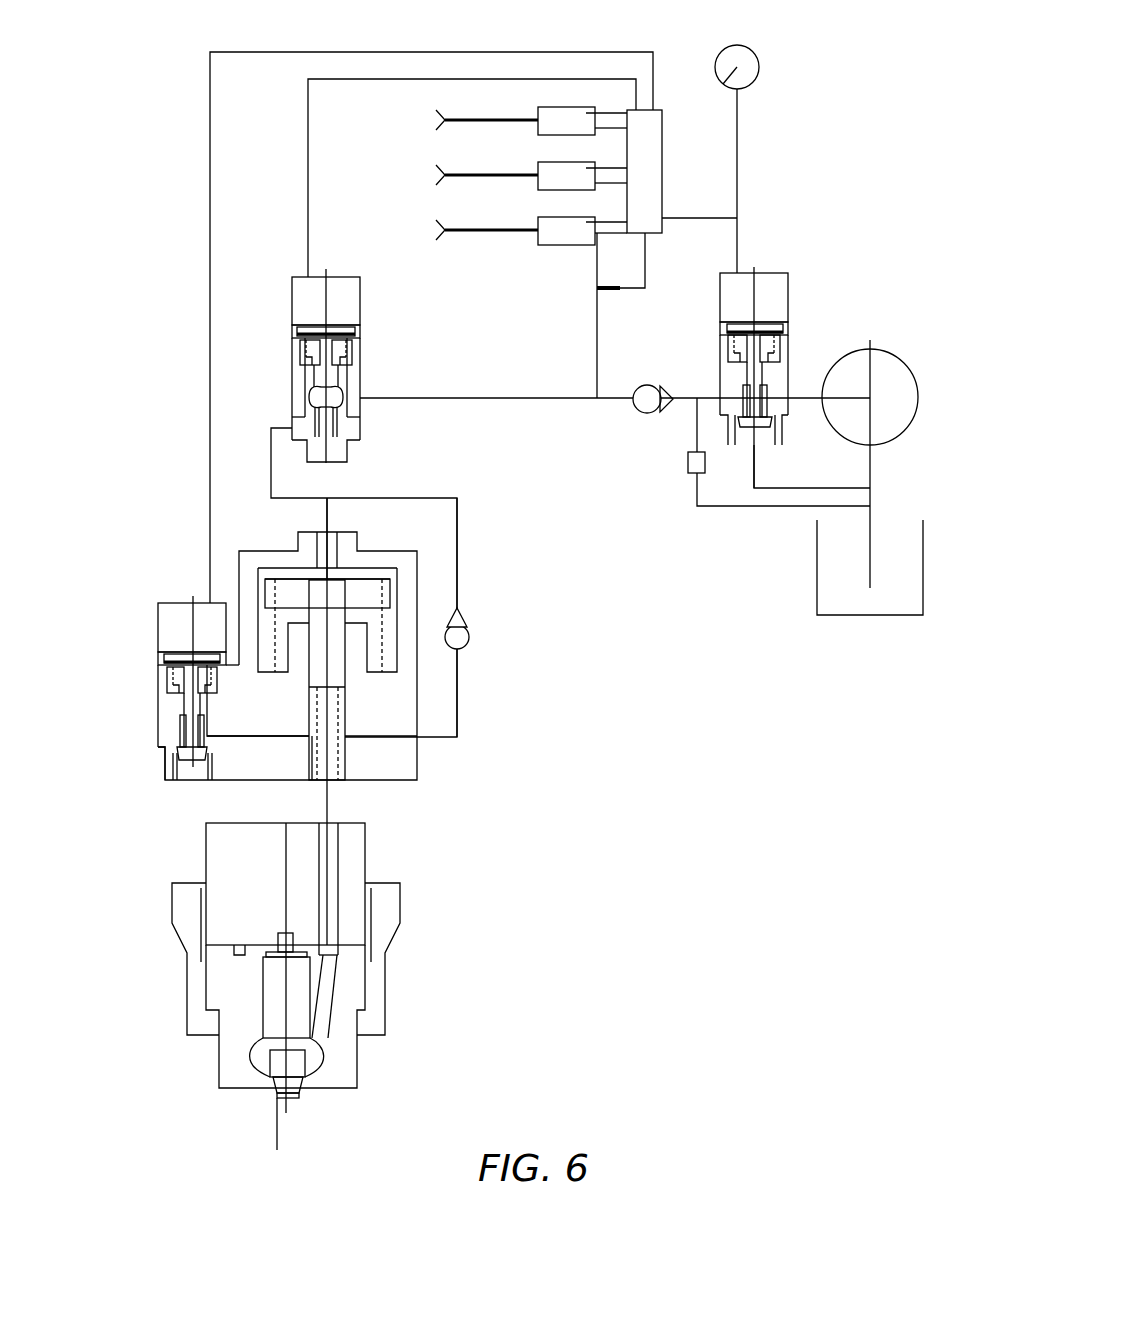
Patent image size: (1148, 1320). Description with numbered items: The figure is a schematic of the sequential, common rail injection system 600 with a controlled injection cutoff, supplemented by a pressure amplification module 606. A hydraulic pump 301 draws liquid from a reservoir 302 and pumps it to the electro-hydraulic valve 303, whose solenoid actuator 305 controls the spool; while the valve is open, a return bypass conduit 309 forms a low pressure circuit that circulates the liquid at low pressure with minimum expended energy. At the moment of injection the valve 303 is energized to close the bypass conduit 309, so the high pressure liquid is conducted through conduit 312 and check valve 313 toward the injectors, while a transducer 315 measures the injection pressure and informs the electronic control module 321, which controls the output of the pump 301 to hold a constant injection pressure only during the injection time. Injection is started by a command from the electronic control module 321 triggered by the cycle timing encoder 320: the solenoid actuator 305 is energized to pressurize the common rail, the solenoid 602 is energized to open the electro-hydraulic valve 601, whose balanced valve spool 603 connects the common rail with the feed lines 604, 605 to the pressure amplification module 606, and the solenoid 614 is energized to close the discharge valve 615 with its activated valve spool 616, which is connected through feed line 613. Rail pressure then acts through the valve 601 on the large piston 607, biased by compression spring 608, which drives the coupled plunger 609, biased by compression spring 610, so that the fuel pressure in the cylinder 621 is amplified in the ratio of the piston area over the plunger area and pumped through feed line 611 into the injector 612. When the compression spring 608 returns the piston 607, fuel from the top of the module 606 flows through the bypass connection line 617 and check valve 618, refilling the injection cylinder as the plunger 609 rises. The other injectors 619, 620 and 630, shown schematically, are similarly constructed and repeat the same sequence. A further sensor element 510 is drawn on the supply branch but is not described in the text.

The sequential common rail injection system 600 is at (388, 1016).
The electro-hydraulic valve 601 is at (383, 403).
The solenoid 602 is at (370, 366).
The balanced valve spool 603 is at (396, 363).
The feed line 604 is at (364, 582).
The feed line 605 is at (279, 539).
The pressure amplification module 606 is at (381, 678).
The large piston 607 is at (387, 517).
The compression spring 608 is at (404, 601).
The plunger 609 is at (425, 680).
The compression spring 610 is at (374, 749).
The feed line 611 is at (399, 924).
The injector 612 is at (343, 955).
The feed line 613 is at (258, 717).
The solenoid 614 is at (168, 666).
The discharge valve 615 is at (147, 722).
The valve spool 616 is at (161, 786).
The bypass connection line 617 is at (520, 617).
The check valve 618 is at (504, 642).
The injector 619 is at (531, 252).
The injector 620 is at (531, 190).
The cylinder 621 is at (283, 775).
The injector 630 is at (531, 135).
The hydraulic pump 301 is at (892, 464).
The reservoir 302 is at (848, 595).
The electro-hydraulic valve 303 is at (801, 377).
The solenoid actuator 305 is at (781, 363).
The return bypass conduit 309 is at (812, 466).
The conduit 312 is at (647, 383).
The check valve 313 is at (604, 415).
The transducer 315 is at (642, 314).
The cycle timing encoder 320 is at (772, 52).
The electronic control module 321 is at (679, 171).
The pressure sensor 510 is at (736, 452).